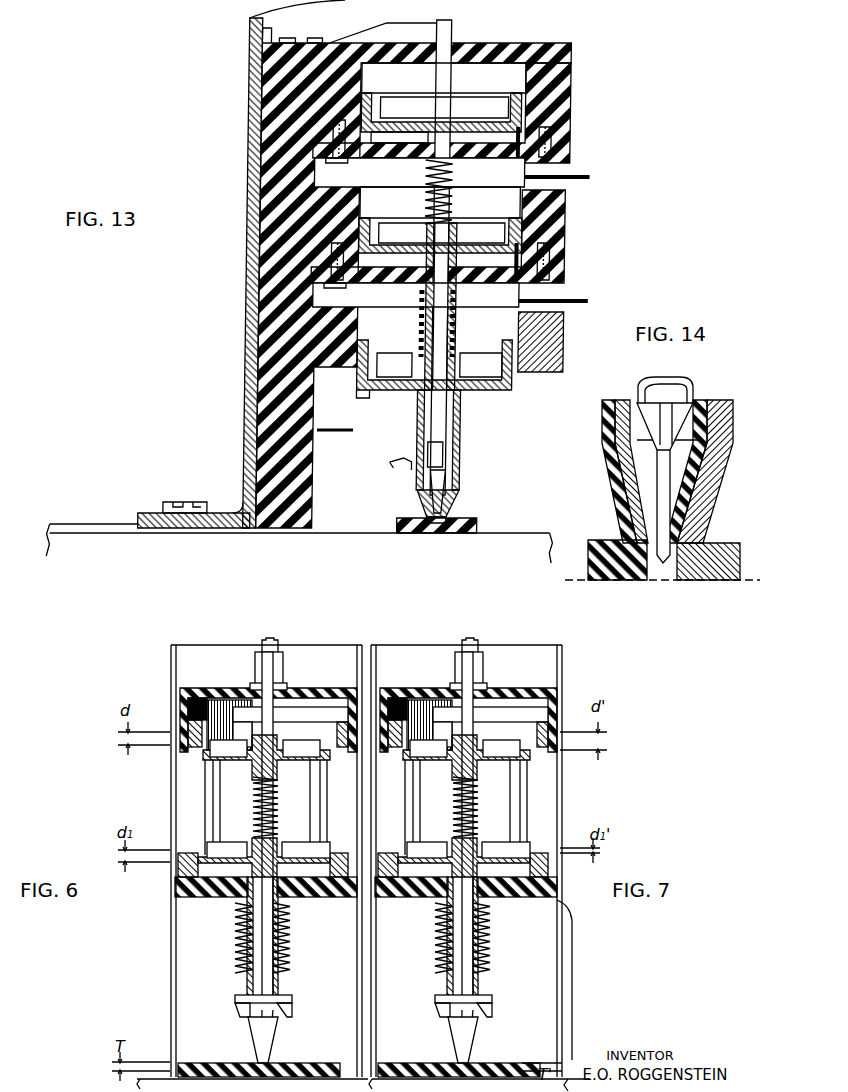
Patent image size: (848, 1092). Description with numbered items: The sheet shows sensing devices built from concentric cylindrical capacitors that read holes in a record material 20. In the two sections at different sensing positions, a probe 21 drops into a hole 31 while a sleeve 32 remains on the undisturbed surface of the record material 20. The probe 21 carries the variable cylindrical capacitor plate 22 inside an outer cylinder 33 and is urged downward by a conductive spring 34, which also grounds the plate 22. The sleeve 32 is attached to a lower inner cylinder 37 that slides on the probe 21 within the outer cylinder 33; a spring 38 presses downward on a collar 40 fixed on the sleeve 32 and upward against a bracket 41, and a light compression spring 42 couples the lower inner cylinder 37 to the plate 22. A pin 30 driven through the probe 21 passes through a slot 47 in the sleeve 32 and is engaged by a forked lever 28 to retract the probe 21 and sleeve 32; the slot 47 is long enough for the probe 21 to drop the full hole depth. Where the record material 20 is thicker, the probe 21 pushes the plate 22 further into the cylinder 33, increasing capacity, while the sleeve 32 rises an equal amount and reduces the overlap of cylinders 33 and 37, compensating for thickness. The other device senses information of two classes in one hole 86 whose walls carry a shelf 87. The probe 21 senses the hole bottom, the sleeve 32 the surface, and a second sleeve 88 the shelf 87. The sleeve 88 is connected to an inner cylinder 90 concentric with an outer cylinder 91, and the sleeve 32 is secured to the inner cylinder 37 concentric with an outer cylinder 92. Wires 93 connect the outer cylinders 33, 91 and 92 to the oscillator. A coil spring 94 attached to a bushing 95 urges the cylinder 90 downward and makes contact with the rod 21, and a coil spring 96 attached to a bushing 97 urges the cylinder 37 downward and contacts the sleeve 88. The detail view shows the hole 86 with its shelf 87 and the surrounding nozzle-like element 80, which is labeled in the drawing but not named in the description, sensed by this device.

In FIG. 13, the record material 20 is at (476, 520).
In FIG. 14, the record material 20 is at (613, 540).
In FIG. 6, the record material 20 is at (283, 1068).
In FIG. 7, the record material 20 is at (459, 1070).
In FIG. 13, the probe 21 is at (452, 35).
In FIG. 14, the probe 21 is at (700, 406).
In FIG. 6, the probe 21 is at (274, 672).
In FIG. 7, the probe 21 is at (466, 840).
In FIG. 13, the variable cylindrical capacitor plate 22 is at (380, 127).
In FIG. 6, the variable cylindrical capacitor plate 22 is at (203, 760).
In FIG. 7, the variable cylindrical capacitor plate 22 is at (492, 758).
In FIG. 13, the forked lever 28 is at (396, 462).
In FIG. 6, the forked lever 28 is at (242, 1015).
In FIG. 7, the forked lever 28 is at (445, 1006).
In FIG. 13, the pin 30 is at (438, 450).
In FIG. 6, the pin 30 is at (292, 997).
In FIG. 7, the pin 30 is at (475, 994).
In FIG. 6, the hole 31 is at (257, 1064).
In FIG. 13, the sleeve 32 is at (453, 484).
In FIG. 14, the sleeve 32 is at (703, 523).
In FIG. 6, the sleeve 32 is at (250, 1045).
In FIG. 7, the sleeve 32 is at (444, 1040).
In FIG. 13, the outer cylinder 33 is at (377, 86).
In FIG. 6, the outer cylinder 33 is at (180, 840).
In FIG. 7, the outer cylinder 33 is at (492, 807).
In FIG. 13, the spring 34 is at (396, 24).
In FIG. 6, the spring 34 is at (270, 637).
In FIG. 7, the spring 34 is at (472, 628).
In FIG. 13, the lower inner cylinder 37 is at (386, 374).
In FIG. 6, the lower inner cylinder 37 is at (203, 840).
In FIG. 7, the lower inner cylinder 37 is at (463, 847).
In FIG. 6, the spring 38 is at (238, 957).
In FIG. 7, the spring 38 is at (425, 938).
In FIG. 6, the collar 40 is at (283, 977).
In FIG. 7, the collar 40 is at (442, 939).
In FIG. 6, the bracket 41 is at (170, 898).
In FIG. 7, the bracket 41 is at (358, 930).
In FIG. 6, the light compression spring 42 is at (253, 815).
In FIG. 7, the light compression spring 42 is at (475, 807).
In FIG. 13, the slot 47 is at (447, 449).
In FIG. 6, the slot 47 is at (247, 993).
In FIG. 7, the slot 47 is at (486, 979).
In FIG. 14, the nozzle body 80 is at (618, 398).
In FIG. 13, the hole 86 is at (440, 533).
In FIG. 14, the hole 86 is at (675, 580).
In FIG. 13, the shelf 87 is at (430, 533).
In FIG. 14, the shelf 87 is at (647, 580).
In FIG. 13, the second sleeve 88 is at (466, 430).
In FIG. 13, the inner cylinder 90 is at (386, 246).
In FIG. 13, the outer cylinder 91 is at (385, 208).
In FIG. 13, the outer cylinder 92 is at (383, 340).
In FIG. 13, the wires 93 is at (588, 177).
In FIG. 13, the coil spring 94 is at (456, 217).
In FIG. 13, the bushing 95 is at (430, 165).
In FIG. 13, the coil spring 96 is at (461, 316).
In FIG. 13, the bushing 97 is at (422, 290).